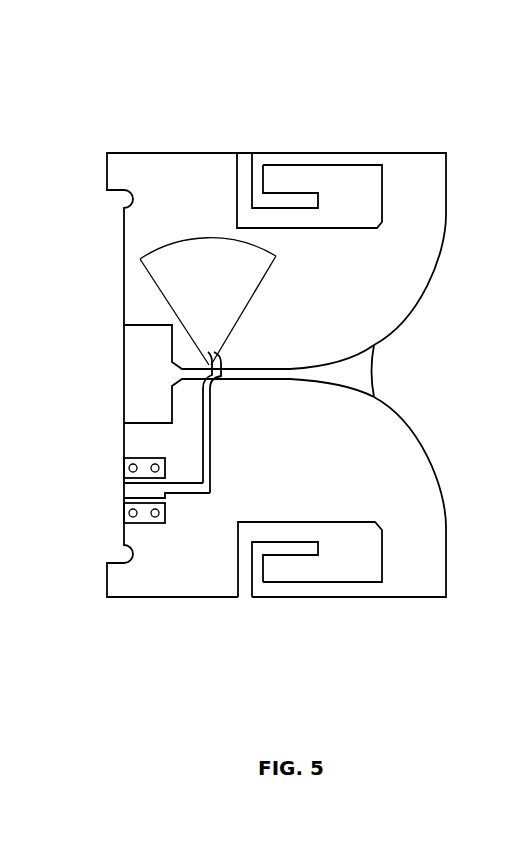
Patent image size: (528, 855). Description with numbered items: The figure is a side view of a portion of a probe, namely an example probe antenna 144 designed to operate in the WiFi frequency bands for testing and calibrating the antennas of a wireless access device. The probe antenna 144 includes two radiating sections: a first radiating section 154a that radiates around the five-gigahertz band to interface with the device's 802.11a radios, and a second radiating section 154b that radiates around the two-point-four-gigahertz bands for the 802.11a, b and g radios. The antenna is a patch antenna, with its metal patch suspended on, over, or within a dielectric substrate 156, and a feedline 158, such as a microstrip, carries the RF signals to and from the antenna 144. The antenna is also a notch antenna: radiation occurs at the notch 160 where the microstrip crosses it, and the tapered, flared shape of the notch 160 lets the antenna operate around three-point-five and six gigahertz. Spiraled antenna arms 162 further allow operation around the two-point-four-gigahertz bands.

The probe antenna 144 is at (124, 110).
The first radiating section 154a is at (397, 285).
The second radiating section 154b is at (298, 151).
The dielectric substrate 156 is at (135, 375).
The feedline 158 is at (184, 283).
The notch 160 is at (374, 345).
The spiraled antenna arms 162 is at (258, 174).